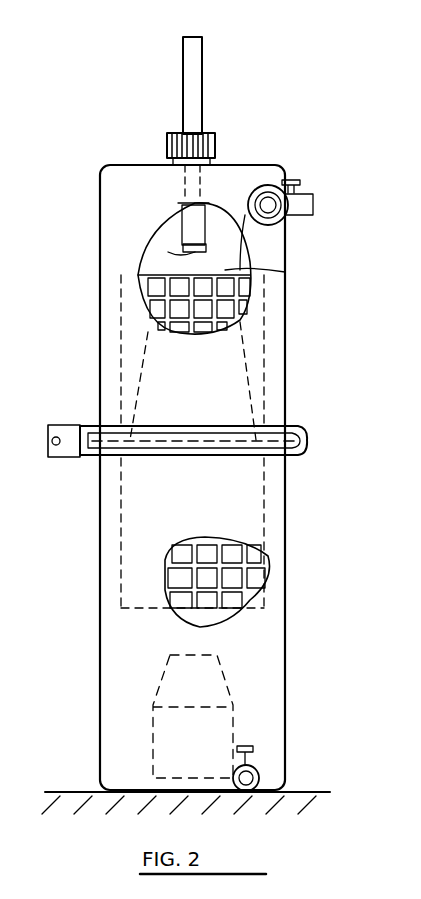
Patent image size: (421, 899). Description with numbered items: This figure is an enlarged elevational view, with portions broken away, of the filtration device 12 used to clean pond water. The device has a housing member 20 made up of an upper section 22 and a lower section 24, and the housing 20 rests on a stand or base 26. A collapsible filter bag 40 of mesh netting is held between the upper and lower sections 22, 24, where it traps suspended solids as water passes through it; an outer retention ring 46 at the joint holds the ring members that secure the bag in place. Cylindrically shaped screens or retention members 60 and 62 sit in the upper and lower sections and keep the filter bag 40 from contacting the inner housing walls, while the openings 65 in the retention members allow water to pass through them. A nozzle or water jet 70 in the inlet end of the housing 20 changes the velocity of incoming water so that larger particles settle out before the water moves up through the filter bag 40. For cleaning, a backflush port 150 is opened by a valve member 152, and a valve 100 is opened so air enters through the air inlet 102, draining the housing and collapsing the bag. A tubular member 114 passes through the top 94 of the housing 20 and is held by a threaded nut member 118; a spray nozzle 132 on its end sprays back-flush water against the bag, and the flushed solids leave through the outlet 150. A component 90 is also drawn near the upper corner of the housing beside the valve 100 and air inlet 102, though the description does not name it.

The filtration device 12 is at (80, 220).
The housing member 20 is at (100, 282).
The upper section 22 is at (285, 356).
The lower section 24 is at (285, 498).
The stand or base 26 is at (326, 802).
The collapsible filter bag 40 is at (262, 320).
The outer retention ring 46 is at (305, 440).
The retention member 60 is at (258, 270).
The retention member 62 is at (262, 560).
The openings 65 is at (196, 340).
The nozzle or water jet 70 is at (225, 677).
The pump 90 is at (284, 232).
The top 94 is at (150, 165).
The valve 100 is at (290, 180).
The air inlet 102 is at (305, 207).
The tubular member 114 is at (195, 84).
The threaded nut member 118 is at (215, 148).
The spray nozzle 132 is at (162, 232).
The outlet or backflush port 150 is at (270, 778).
The valve member 152 is at (262, 745).